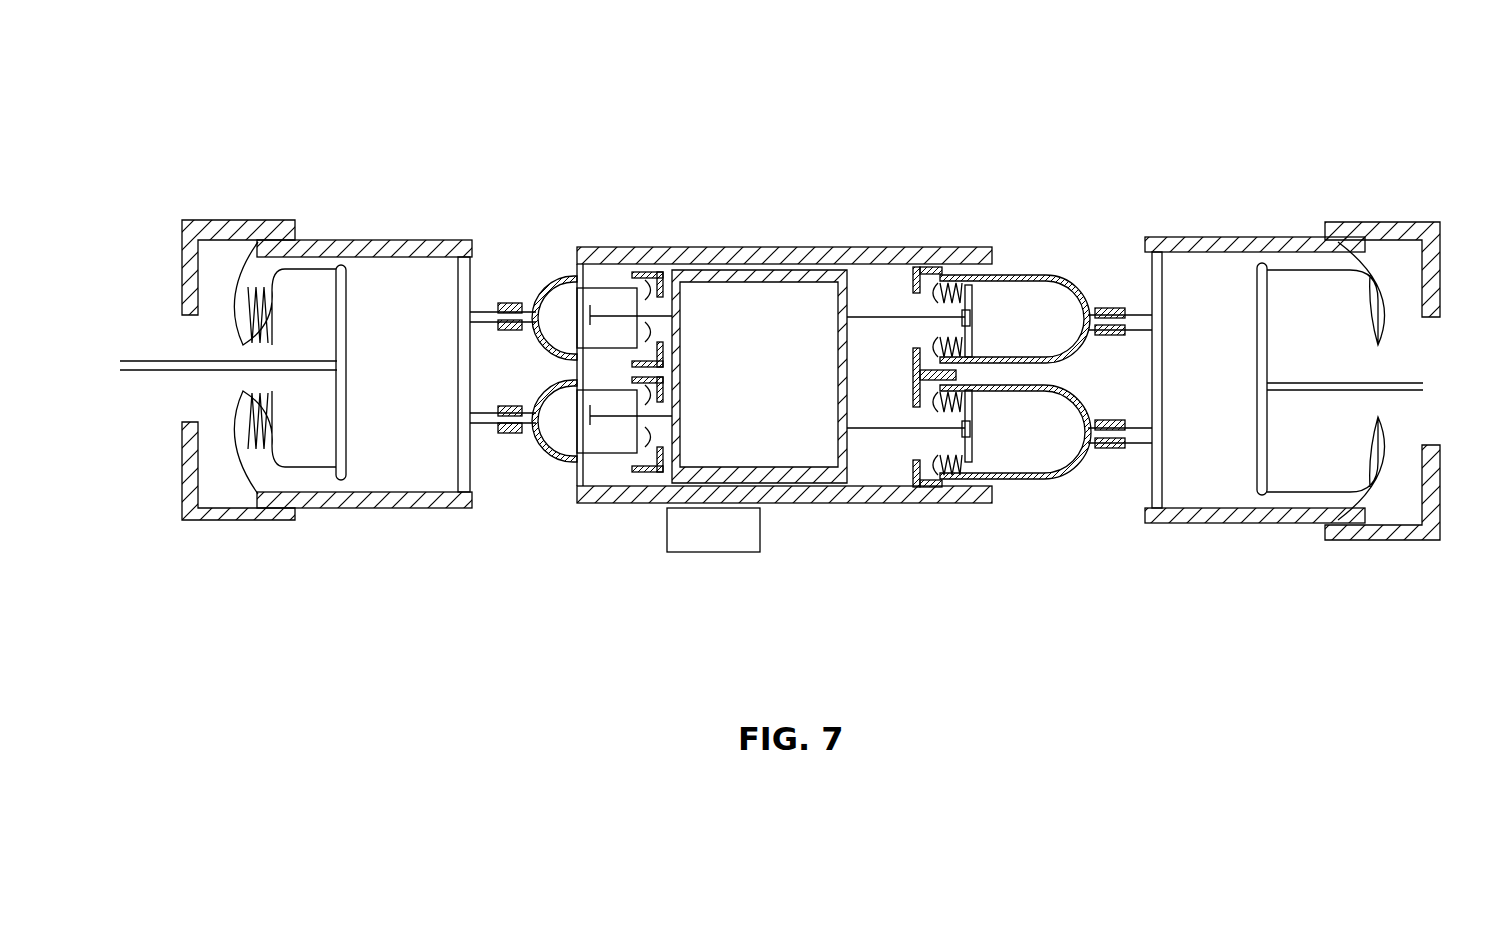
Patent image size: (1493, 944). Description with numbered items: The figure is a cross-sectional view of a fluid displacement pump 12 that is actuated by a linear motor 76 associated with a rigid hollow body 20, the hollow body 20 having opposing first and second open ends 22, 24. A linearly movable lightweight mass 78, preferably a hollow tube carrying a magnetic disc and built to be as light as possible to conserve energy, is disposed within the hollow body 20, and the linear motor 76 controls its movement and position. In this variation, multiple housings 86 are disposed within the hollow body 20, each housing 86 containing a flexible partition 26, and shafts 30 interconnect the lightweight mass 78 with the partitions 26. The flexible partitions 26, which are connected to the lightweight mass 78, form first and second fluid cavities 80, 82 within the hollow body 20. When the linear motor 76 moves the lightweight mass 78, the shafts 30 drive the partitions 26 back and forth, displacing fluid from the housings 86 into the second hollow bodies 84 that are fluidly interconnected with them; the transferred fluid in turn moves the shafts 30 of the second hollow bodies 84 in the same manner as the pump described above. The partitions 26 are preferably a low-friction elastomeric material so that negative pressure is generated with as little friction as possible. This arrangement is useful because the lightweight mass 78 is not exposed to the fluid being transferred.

The fluid displacement pump 12 is at (479, 117).
The rigid hollow body 20 is at (935, 257).
The first open end 22 is at (578, 250).
The second open end 24 is at (995, 265).
The flexible partition 26 is at (250, 472).
The shaft 30 is at (160, 372).
The linear motor 76 is at (713, 552).
The lightweight mass 78 is at (745, 310).
The first fluid cavity 80 is at (560, 428).
The second fluid cavity 82 is at (1038, 455).
The second hollow body 84 is at (388, 248).
The housing 86 is at (553, 280).